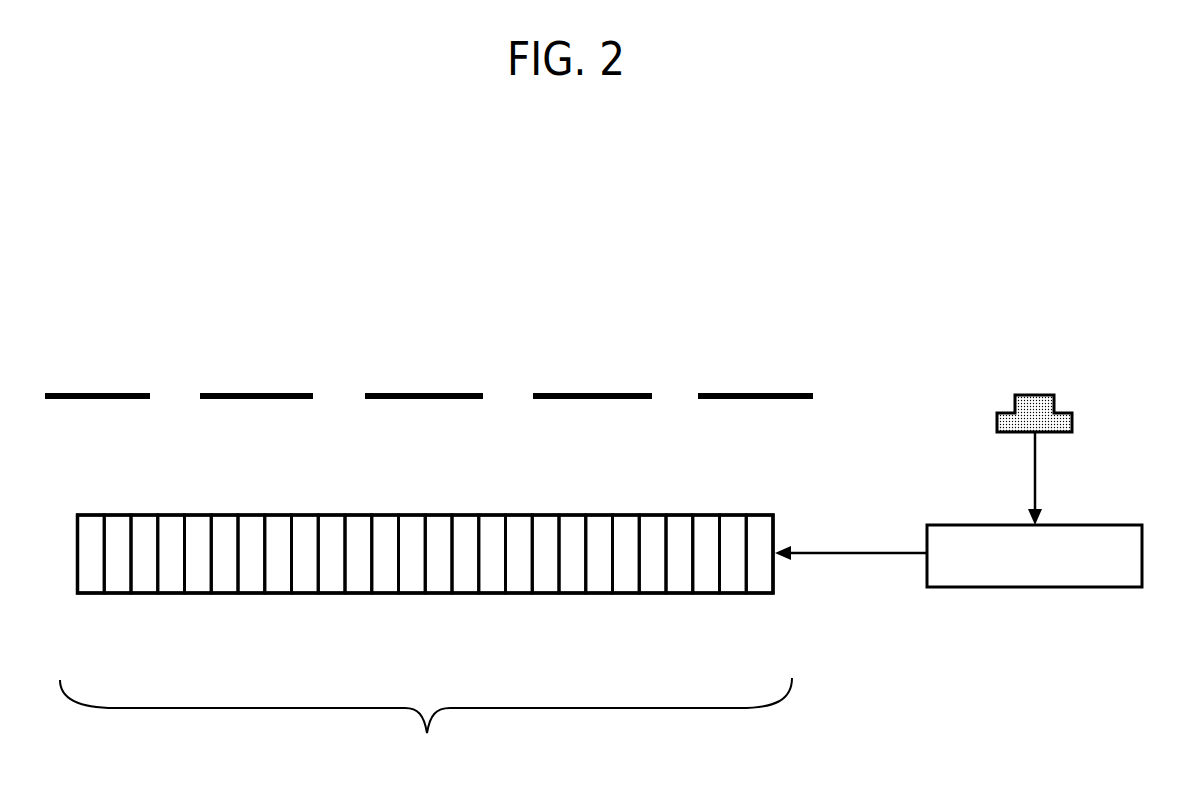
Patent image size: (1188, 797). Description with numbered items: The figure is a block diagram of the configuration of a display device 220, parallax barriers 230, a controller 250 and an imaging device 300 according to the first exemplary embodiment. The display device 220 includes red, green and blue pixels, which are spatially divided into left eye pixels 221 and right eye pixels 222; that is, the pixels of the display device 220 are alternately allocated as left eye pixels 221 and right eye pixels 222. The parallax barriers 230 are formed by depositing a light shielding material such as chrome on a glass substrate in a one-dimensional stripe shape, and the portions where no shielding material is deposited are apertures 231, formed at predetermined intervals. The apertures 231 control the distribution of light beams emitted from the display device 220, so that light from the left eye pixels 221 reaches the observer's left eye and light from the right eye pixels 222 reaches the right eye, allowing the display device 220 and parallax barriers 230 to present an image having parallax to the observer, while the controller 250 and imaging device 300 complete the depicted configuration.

The display device 220 is at (426, 646).
The left eye pixels 221 is at (249, 527).
The right eye pixels 222 is at (120, 575).
The parallax barriers 230 is at (743, 398).
The apertures 231 is at (333, 398).
The controller 250 is at (1113, 525).
The imaging device 300 is at (1058, 424).